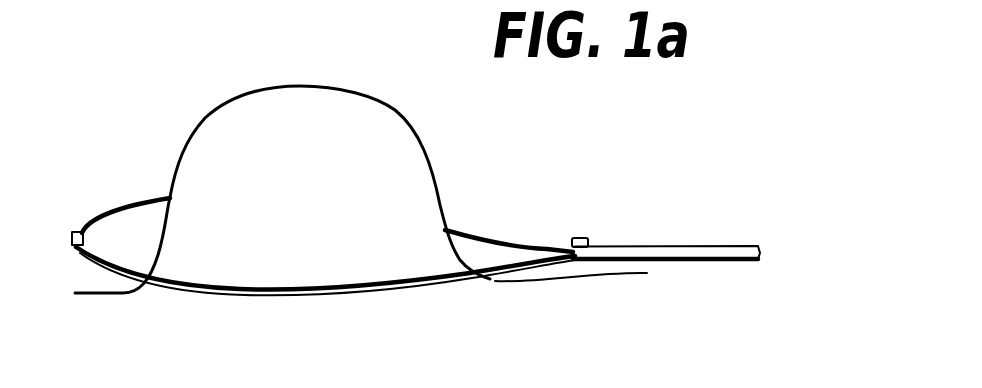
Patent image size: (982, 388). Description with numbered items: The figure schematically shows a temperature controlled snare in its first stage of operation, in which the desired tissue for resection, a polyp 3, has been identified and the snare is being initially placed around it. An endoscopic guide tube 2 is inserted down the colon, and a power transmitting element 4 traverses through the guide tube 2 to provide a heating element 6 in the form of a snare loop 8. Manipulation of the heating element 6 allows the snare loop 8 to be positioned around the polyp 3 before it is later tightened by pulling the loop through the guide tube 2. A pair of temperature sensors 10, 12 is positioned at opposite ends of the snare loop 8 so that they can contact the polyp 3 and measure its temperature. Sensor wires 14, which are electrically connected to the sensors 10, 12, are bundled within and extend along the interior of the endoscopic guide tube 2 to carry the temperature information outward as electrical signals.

The endoscopic guide tube 2 is at (690, 245).
The polyp 3 is at (354, 93).
The power transmitting element 4 is at (693, 262).
The heating element 6 is at (325, 207).
The snare loop 8 is at (462, 233).
The temperature sensor 10 is at (93, 218).
The temperature sensor 12 is at (585, 240).
The sensor wires 14 is at (275, 298).